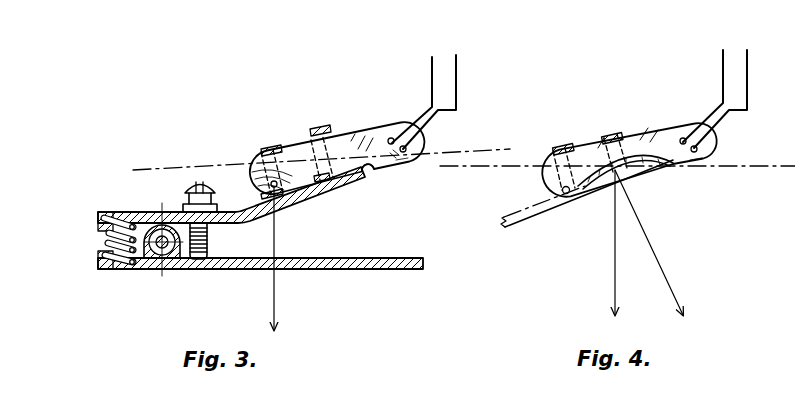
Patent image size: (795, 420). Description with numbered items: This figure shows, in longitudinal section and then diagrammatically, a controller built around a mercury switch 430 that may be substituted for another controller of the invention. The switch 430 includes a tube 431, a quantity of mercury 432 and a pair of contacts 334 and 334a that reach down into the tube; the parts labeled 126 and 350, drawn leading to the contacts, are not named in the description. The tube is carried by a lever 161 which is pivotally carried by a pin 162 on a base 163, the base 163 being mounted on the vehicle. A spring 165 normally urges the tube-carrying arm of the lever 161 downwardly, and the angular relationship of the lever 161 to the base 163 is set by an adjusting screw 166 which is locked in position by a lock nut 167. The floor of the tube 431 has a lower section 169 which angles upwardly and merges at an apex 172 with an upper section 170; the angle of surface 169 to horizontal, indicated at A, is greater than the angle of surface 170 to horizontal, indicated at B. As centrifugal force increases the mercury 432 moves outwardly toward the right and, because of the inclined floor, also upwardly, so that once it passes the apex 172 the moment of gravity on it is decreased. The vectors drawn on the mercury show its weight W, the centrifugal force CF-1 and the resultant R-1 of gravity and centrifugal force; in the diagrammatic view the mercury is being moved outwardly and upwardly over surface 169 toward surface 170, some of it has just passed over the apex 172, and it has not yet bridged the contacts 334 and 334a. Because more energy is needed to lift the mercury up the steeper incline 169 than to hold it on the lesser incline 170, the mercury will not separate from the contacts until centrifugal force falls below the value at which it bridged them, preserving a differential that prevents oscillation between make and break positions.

In FIG. 3, the stylus holder 126 is at (457, 72).
In FIG. 3, the lever 161 is at (276, 207).
In FIG. 3, the pin 162 is at (157, 250).
In FIG. 3, the base 163 is at (361, 266).
In FIG. 3, the spring 165 is at (110, 233).
In FIG. 3, the adjusting screw 166 is at (208, 238).
In FIG. 3, the lock nut 167 is at (184, 207).
In FIG. 3, the lower section 169 is at (323, 183).
In FIG. 4, the lower section 169 is at (565, 193).
In FIG. 3, the upper section 170 is at (404, 163).
In FIG. 4, the upper section 170 is at (702, 158).
In FIG. 3, the apex 172 is at (369, 175).
In FIG. 4, the apex 172 is at (647, 123).
In FIG. 3, the contact 334 is at (406, 149).
In FIG. 4, the contact 334 is at (697, 148).
In FIG. 3, the contact 334a is at (391, 138).
In FIG. 4, the contact 334a is at (684, 138).
In FIG. 3, the stylus arm 350 is at (432, 61).
In FIG. 3, the mercury switch 430 is at (348, 124).
In FIG. 3, the tube 431 is at (373, 147).
In FIG. 3, the mercury 432 is at (293, 167).
In FIG. 4, the mercury 432 is at (588, 183).
In FIG. 3, the angle of surface 169 to horizontal A is at (236, 201).
In FIG. 3, the angle of surface 170 to horizontal B is at (495, 192).
In FIG. 3, the weight of the mercury W is at (275, 296).
In FIG. 4, the weight of the mercury W is at (615, 280).
In FIG. 4, the resultant force R-1 is at (659, 261).
In FIG. 4, the centrifugal force vector CF-1 is at (665, 170).